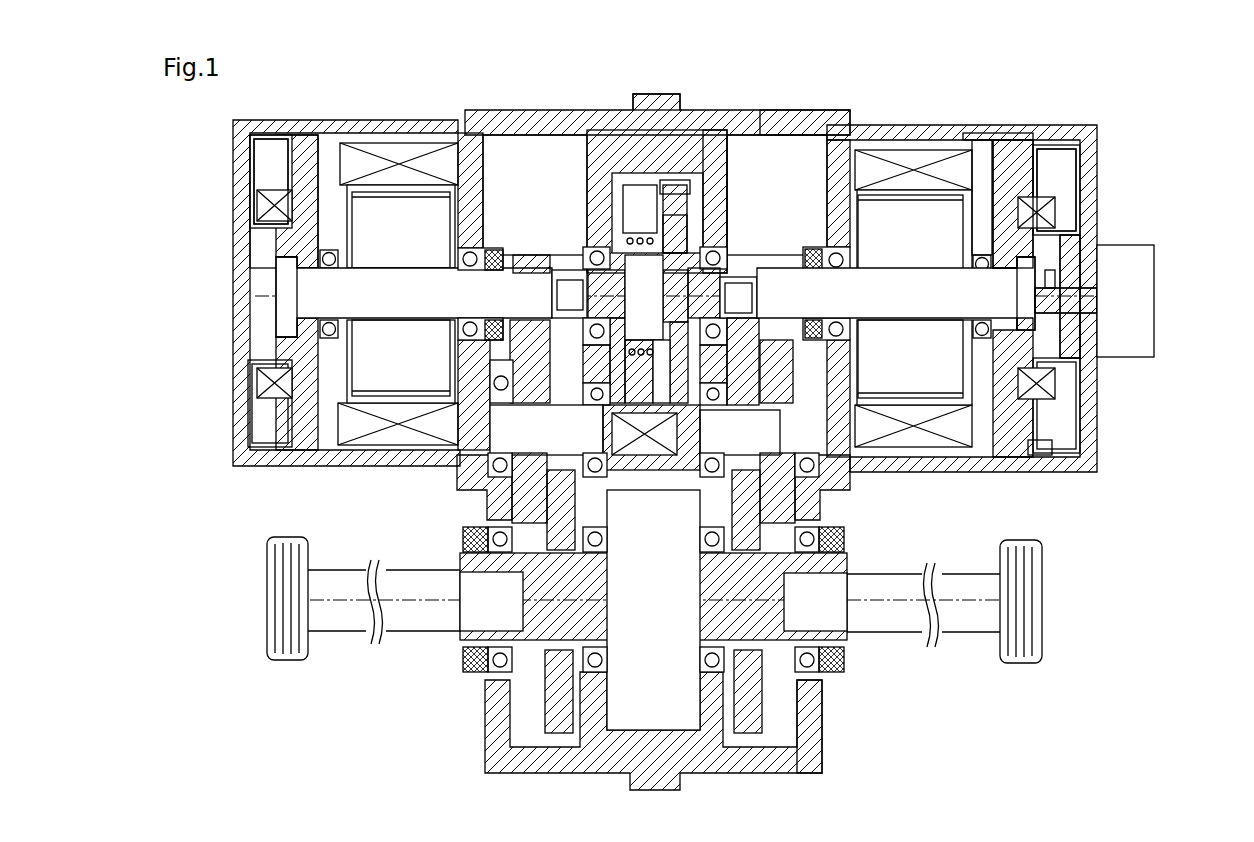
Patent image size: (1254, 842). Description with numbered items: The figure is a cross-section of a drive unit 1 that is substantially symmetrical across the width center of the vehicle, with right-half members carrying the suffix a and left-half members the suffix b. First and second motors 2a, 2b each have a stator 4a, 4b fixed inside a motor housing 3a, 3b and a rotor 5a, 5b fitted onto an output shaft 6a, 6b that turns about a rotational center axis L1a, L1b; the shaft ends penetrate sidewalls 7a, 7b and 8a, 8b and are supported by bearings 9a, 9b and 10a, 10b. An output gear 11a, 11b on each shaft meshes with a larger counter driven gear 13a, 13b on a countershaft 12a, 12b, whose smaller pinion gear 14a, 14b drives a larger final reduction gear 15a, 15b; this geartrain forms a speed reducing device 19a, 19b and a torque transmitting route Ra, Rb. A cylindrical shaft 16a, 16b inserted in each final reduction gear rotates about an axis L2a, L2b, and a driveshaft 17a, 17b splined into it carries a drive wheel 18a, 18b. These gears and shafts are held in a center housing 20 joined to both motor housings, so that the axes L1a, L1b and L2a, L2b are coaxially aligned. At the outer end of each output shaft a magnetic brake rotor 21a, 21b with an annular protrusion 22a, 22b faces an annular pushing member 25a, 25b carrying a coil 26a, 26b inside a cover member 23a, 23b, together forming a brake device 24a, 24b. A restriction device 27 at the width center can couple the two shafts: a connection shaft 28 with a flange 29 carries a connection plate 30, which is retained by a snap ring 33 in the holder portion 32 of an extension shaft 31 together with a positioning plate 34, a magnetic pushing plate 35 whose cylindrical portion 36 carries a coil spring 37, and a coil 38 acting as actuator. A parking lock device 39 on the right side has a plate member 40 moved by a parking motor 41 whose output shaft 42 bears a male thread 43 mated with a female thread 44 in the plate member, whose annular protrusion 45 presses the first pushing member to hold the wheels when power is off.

The drive unit 1 is at (388, 718).
The first motor 2a is at (979, 296).
The second motor 2b is at (366, 289).
The first motor housing 3a is at (925, 148).
The second motor housing 3b is at (392, 145).
The stator 4a is at (935, 425).
The stator 4b is at (390, 430).
The rotor 5a is at (958, 400).
The rotor 5b is at (360, 400).
The first output shaft 6a is at (900, 420).
The second output shaft 6b is at (295, 282).
The sidewall 7a is at (832, 180).
The sidewall 7b is at (480, 170).
The sidewall 8a is at (982, 185).
The sidewall 8b is at (327, 245).
The bearing 9a is at (880, 400).
The bearing 9b is at (445, 390).
The bearing 10a is at (1068, 353).
The bearing 10b is at (258, 330).
The first output gear 11a is at (800, 262).
The second output gear 11b is at (532, 255).
The countershaft 12a is at (848, 488).
The countershaft 12b is at (652, 455).
The counter driven gear 13a is at (730, 340).
The counter driven gear 13b is at (552, 348).
The pinion gear 14a is at (735, 378).
The pinion gear 14b is at (512, 388).
The final reduction gear 15a is at (760, 722).
The final reduction gear 15b is at (540, 718).
The first cylindrical shaft 16a is at (832, 632).
The second cylindrical shaft 16b is at (470, 625).
The driveshaft 17a is at (924, 622).
The driveshaft 17b is at (410, 605).
The first drive wheel 18a is at (1042, 602).
The second drive wheel 18b is at (290, 650).
The speed reducing device 19a is at (912, 507).
The speed reducing device 19b is at (412, 512).
The center housing 20 is at (788, 122).
The first brake rotor 21a is at (1008, 152).
The brake rotor 21b is at (300, 165).
The annular protrusion 22a is at (1030, 150).
The annular protrusion 22b is at (272, 190).
The first cover member 23a is at (1090, 196).
The cover member 23b is at (243, 222).
The first brake device 24a is at (1055, 117).
The second brake device 24b is at (240, 142).
The first pushing member 25a is at (1045, 172).
The pushing member 25b is at (262, 178).
The coil 26a is at (1048, 224).
The coil 26b is at (258, 252).
The restriction device 27 is at (724, 106).
The connection shaft 28 is at (732, 272).
The flange 29 is at (700, 228).
The connection plate 30 is at (690, 205).
The extension shaft 31 is at (572, 275).
The holder portion 32 is at (640, 195).
The snap ring 33 is at (700, 188).
The positioning plate 34 is at (598, 195).
The pushing plate 35 is at (682, 185).
The cylindrical portion 36 is at (649, 252).
The coil spring 37 is at (645, 340).
The coil 38 is at (657, 130).
The parking lock device 39 is at (1108, 382).
The plate member 40 is at (1093, 427).
The parking motor 41 is at (1143, 345).
The output shaft 42 is at (1090, 306).
The male thread 43 is at (1055, 280).
The female thread 44 is at (1068, 298).
The annular protrusion 45 is at (1040, 455).
The torque transmitting route Ra is at (800, 165).
The torque transmitting route Rb is at (500, 150).
The rotational center axis L1a is at (1080, 275).
The rotational center axis L1b is at (282, 296).
The rotational center axis L2a is at (853, 592).
The rotational center axis L2b is at (475, 655).